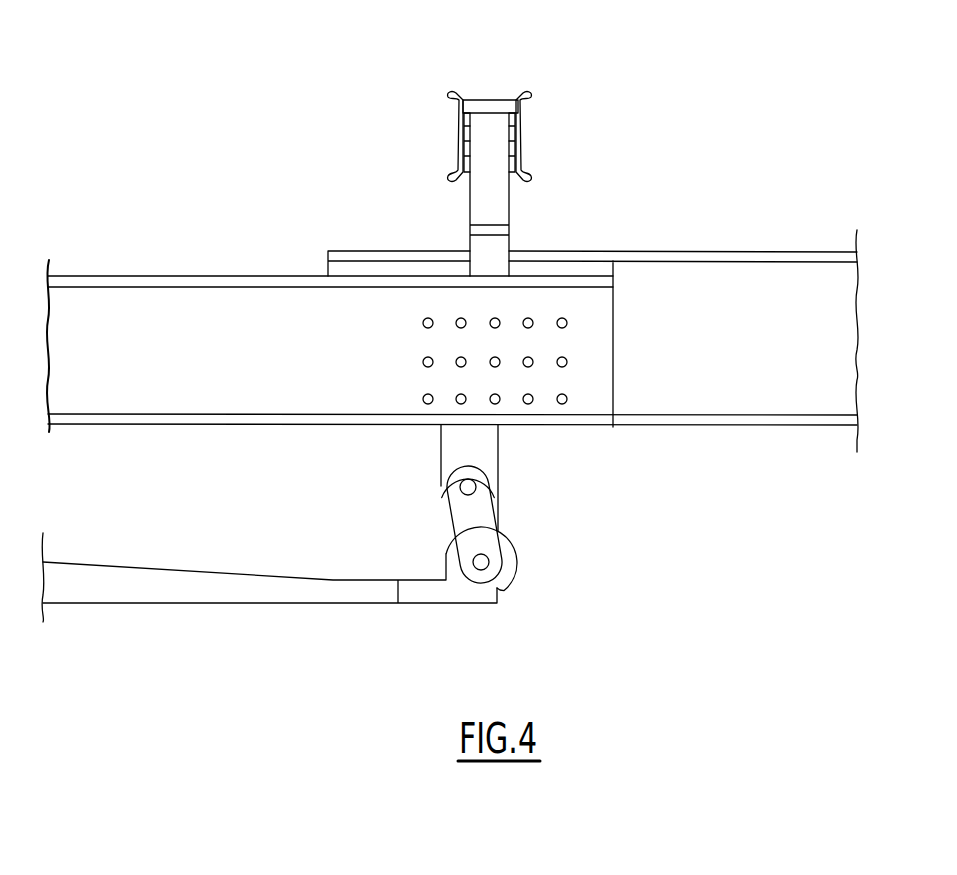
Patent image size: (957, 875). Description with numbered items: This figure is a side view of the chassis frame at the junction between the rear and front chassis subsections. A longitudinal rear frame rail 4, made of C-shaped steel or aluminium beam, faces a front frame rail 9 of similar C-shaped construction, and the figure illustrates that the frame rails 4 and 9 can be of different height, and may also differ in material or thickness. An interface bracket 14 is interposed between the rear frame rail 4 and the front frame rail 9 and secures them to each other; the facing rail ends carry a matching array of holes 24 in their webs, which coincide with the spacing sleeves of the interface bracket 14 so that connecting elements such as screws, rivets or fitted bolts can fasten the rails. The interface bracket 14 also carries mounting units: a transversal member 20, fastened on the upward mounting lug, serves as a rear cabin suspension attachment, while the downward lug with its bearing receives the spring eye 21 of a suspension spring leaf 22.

The rear frame rail 4 is at (857, 374).
The front frame rail 9 is at (187, 380).
The interface bracket 14 is at (489, 270).
The transversal member 20 is at (514, 98).
The spring eye 21 is at (515, 565).
The suspension spring leaf 22 is at (223, 596).
The array of holes 24 is at (559, 401).